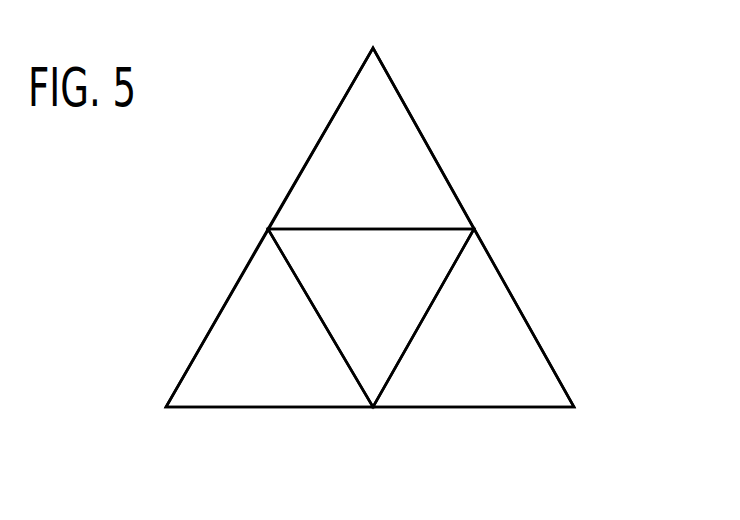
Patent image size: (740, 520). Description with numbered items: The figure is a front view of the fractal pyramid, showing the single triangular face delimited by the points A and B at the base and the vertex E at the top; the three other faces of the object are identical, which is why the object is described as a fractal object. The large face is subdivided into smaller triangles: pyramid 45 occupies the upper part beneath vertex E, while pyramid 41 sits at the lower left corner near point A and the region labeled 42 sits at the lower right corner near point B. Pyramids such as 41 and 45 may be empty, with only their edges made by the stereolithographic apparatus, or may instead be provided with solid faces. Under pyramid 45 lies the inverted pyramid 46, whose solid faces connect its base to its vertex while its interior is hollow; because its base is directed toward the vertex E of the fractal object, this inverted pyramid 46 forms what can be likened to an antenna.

The pyramid 41 is at (223, 335).
The second sub-triangle region 42 is at (517, 357).
The pyramid 45 is at (417, 177).
The inverted pyramid 46 is at (422, 282).
The vertex E is at (373, 48).
The point A is at (165, 406).
The point B is at (574, 407).